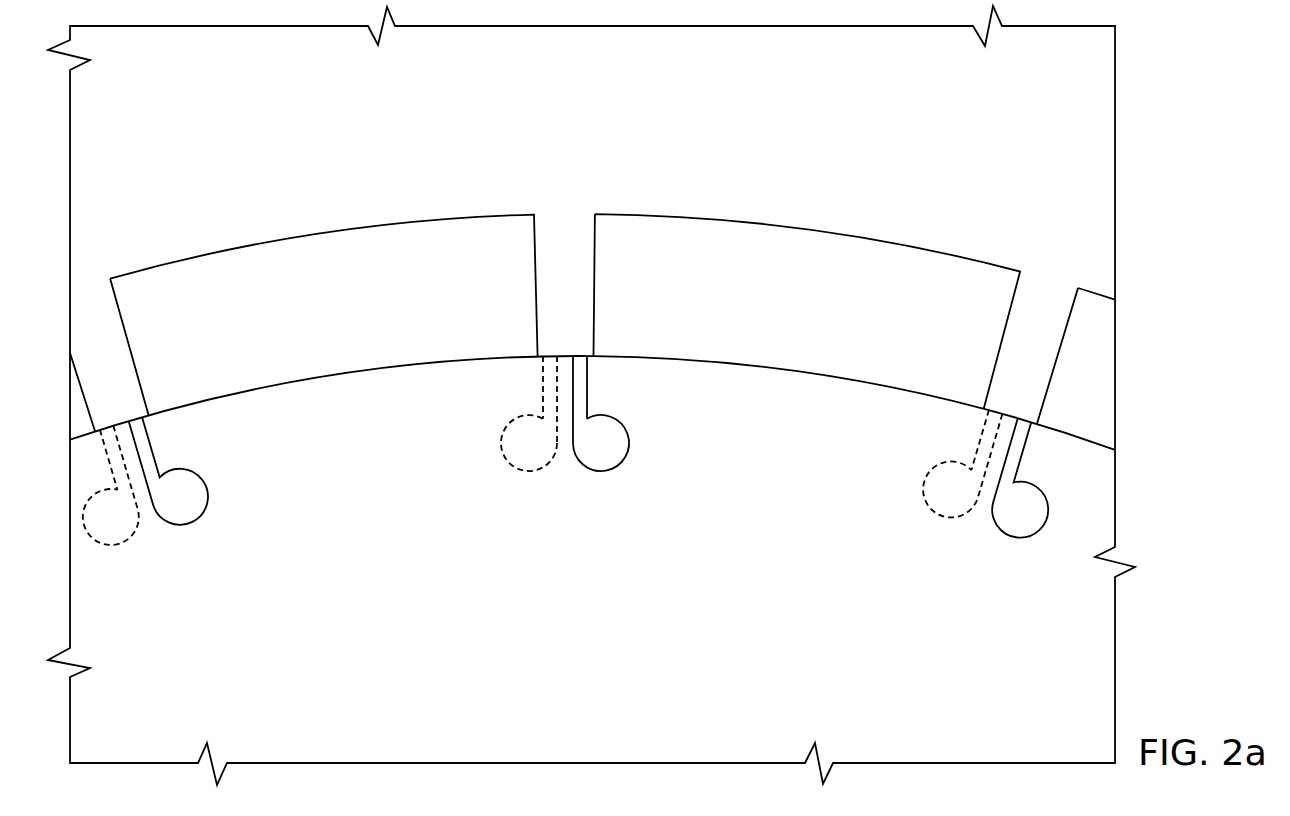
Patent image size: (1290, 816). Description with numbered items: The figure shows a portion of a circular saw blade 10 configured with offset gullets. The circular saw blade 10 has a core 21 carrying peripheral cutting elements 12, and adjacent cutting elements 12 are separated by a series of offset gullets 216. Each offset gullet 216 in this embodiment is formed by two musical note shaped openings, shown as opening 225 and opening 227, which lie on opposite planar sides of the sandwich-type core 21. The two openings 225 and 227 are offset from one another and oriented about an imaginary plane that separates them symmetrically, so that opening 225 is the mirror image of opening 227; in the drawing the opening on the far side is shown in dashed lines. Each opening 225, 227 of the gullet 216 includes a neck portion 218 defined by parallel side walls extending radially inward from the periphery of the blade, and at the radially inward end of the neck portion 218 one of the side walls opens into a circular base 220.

The circular saw blade 10 is at (281, 146).
The cutting elements 12 is at (810, 326).
The core 21 is at (604, 721).
The offset gullet 216 is at (560, 490).
The neck portion 218 is at (590, 398).
The circular base 220 is at (437, 443).
The opening 225 is at (542, 398).
The opening 227 is at (630, 447).